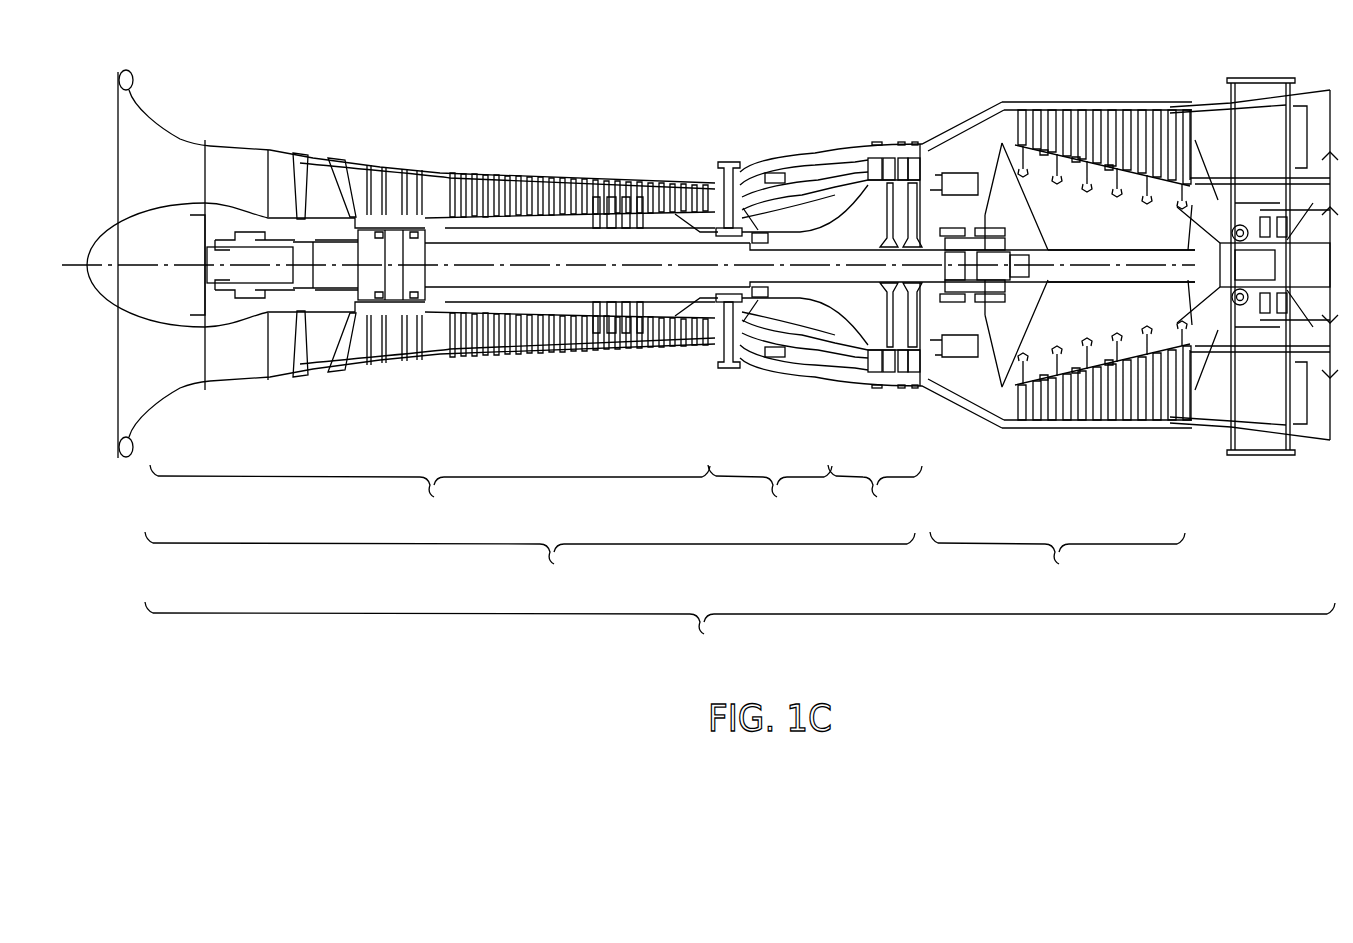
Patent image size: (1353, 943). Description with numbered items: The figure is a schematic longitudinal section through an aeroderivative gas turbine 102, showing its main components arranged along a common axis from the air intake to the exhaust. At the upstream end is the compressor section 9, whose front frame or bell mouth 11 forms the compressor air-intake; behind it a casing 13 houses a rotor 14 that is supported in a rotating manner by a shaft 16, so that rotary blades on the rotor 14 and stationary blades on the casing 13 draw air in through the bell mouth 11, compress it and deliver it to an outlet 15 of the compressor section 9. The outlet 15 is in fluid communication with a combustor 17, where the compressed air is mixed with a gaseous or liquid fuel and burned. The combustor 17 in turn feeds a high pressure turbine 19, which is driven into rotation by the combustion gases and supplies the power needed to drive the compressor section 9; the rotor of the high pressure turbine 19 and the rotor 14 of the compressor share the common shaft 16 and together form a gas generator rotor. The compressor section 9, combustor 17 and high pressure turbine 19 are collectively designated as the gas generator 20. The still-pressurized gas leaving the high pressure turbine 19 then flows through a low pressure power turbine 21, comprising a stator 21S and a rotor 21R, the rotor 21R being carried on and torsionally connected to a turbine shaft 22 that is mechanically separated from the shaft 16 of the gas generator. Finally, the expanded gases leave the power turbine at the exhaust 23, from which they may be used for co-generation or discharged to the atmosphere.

The compressor section 9 is at (641, 264).
The bell mouth 11 is at (179, 395).
The casing 13 is at (436, 166).
The rotor 14 is at (564, 197).
The outlet 15 is at (725, 180).
The shaft 16 is at (545, 263).
The combustor 17 is at (813, 161).
The high pressure turbine 19 is at (877, 497).
The gas generator 20 is at (641, 292).
The low pressure power turbine 21 is at (1090, 350).
The rotor 21R is at (1111, 330).
The stator 21S is at (1123, 424).
The turbine shaft 22 is at (1097, 252).
The exhaust 23 is at (1264, 94).
The aeroderivative gas turbine 102 is at (700, 352).